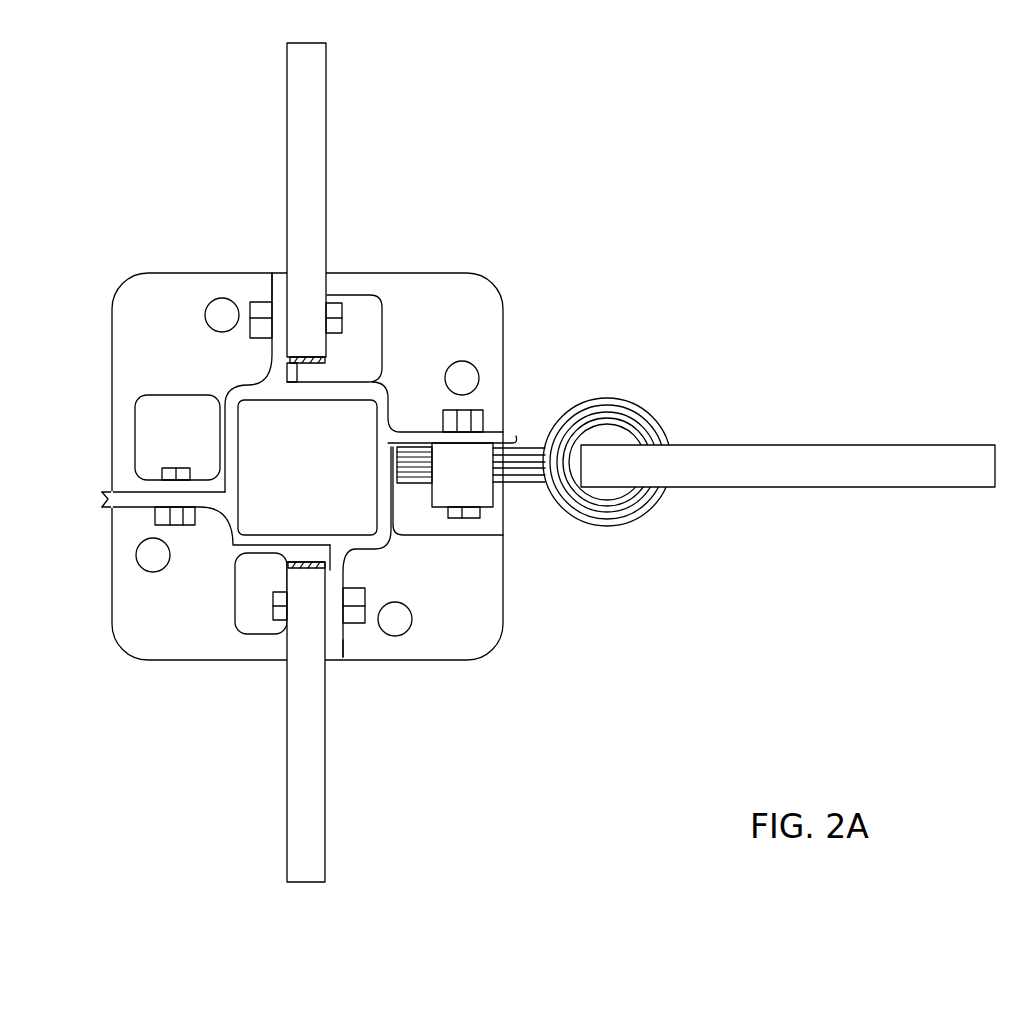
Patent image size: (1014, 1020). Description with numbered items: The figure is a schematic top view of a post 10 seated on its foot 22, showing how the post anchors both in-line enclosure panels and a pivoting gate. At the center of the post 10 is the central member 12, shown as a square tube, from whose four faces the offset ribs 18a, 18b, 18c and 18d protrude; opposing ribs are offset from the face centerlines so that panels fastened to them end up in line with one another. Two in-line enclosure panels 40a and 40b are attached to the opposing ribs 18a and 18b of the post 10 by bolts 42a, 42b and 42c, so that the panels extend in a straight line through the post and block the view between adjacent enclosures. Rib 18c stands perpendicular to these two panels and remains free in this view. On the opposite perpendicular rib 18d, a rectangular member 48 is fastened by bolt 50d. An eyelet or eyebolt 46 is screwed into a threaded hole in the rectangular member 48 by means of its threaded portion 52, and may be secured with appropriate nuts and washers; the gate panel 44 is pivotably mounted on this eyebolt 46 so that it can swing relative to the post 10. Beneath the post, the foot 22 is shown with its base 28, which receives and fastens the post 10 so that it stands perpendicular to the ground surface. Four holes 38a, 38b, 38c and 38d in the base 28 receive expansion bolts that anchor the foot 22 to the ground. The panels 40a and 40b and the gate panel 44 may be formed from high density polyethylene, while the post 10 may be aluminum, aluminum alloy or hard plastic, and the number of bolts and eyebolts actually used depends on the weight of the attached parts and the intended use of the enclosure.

The post 10 is at (386, 384).
The central member 12 is at (385, 528).
The rib 18a is at (283, 268).
The rib 18b is at (332, 667).
The rib 18c is at (105, 498).
The rib 18d is at (508, 437).
The foot 22 is at (112, 297).
The base 28 is at (183, 625).
The hole 38a is at (207, 302).
The hole 38b is at (400, 637).
The hole 38c is at (133, 557).
The hole 38d is at (478, 372).
The enclosure panel 40a is at (326, 155).
The enclosure panel 40b is at (325, 825).
The bolt 42a is at (340, 305).
The bolt 42b is at (274, 620).
The bolt 42c is at (162, 470).
The gate panel 44 is at (733, 445).
The eyebolt 46 is at (610, 398).
The rectangular member 48 is at (485, 490).
The bolt 50d is at (467, 518).
The threaded portion 52 is at (508, 484).